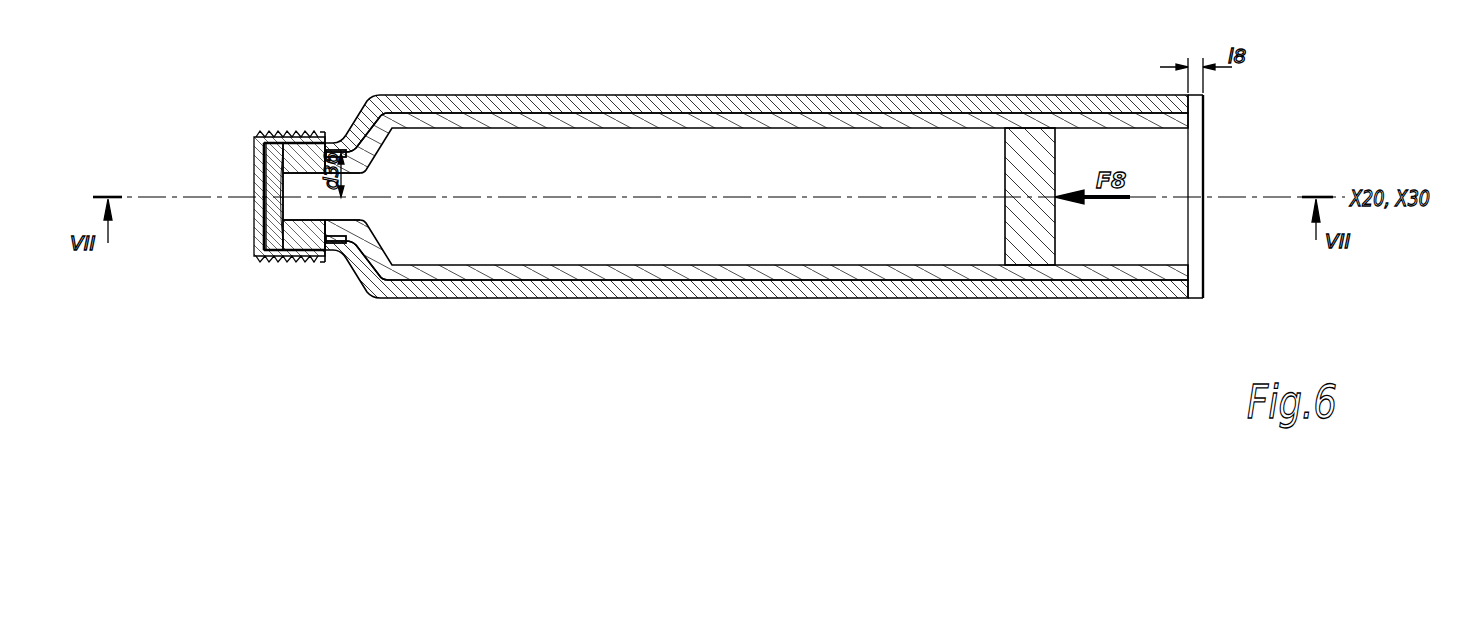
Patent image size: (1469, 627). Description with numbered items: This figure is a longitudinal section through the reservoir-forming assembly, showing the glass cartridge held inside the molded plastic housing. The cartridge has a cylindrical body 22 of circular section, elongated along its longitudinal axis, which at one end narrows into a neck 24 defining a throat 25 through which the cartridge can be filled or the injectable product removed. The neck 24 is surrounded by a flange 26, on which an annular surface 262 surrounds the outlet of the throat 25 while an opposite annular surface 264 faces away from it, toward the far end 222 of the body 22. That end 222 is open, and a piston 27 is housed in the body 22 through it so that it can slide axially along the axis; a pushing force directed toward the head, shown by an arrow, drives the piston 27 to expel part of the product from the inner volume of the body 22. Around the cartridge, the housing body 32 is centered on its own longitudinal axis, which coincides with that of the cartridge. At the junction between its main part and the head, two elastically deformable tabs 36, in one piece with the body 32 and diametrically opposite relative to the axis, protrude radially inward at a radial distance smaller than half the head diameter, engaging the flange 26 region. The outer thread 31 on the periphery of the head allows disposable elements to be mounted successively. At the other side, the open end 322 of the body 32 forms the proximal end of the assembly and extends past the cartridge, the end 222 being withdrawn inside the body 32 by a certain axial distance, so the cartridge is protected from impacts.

The cylindrical body 22 is at (1017, 122).
The end of the body 222 is at (1183, 273).
The neck 24 is at (364, 200).
The throat 25 is at (289, 208).
The flange 26 is at (308, 163).
The annular surface 262 is at (268, 157).
The annular surface 264 is at (349, 243).
The piston 27 is at (1012, 165).
The outer thread 31 is at (274, 269).
The body of the housing 32 is at (934, 101).
The open end of the body 322 is at (1204, 100).
The elastically deformable tabs 36 is at (338, 136).